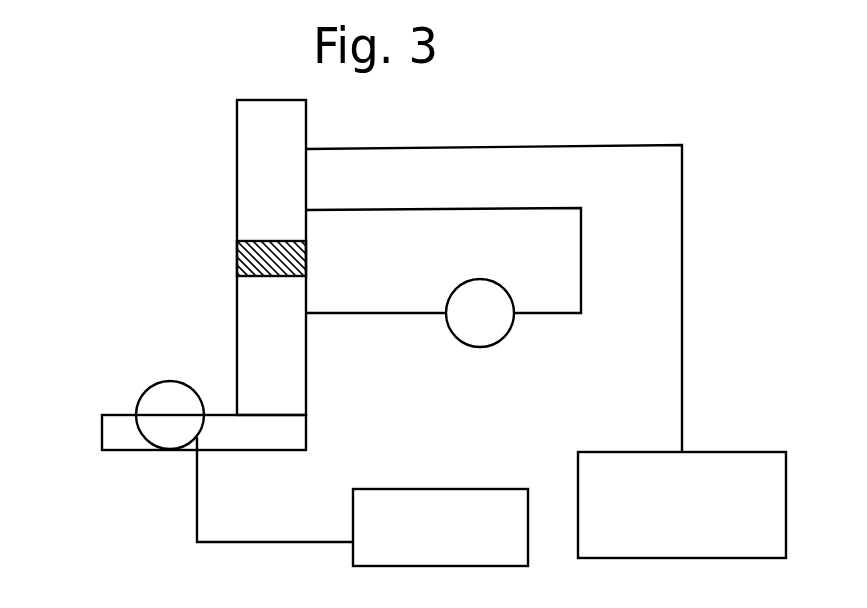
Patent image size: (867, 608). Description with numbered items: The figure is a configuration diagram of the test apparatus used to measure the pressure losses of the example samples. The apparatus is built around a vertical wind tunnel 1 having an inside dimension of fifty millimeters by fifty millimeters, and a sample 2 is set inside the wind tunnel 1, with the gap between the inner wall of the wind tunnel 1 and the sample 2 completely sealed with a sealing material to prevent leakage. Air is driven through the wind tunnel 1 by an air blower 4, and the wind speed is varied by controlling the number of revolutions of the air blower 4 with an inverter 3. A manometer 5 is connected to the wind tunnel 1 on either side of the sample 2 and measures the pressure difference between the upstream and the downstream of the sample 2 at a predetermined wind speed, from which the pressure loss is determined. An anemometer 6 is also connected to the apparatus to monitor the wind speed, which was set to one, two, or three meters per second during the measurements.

The vertical wind tunnel 1 is at (237, 169).
The sample 2 is at (238, 263).
The inverter 3 is at (440, 527).
The air blower 4 is at (130, 439).
The manometer 5 is at (452, 337).
The anemometer 6 is at (682, 505).